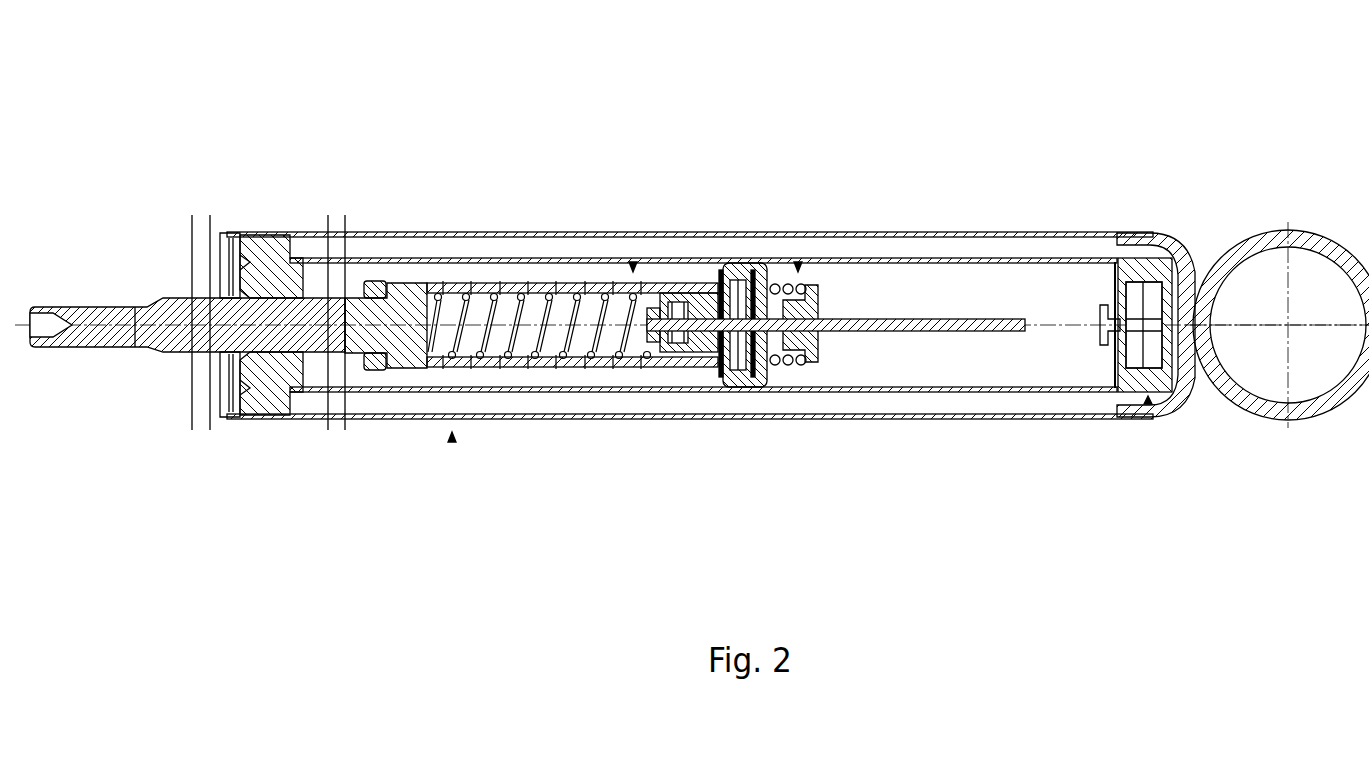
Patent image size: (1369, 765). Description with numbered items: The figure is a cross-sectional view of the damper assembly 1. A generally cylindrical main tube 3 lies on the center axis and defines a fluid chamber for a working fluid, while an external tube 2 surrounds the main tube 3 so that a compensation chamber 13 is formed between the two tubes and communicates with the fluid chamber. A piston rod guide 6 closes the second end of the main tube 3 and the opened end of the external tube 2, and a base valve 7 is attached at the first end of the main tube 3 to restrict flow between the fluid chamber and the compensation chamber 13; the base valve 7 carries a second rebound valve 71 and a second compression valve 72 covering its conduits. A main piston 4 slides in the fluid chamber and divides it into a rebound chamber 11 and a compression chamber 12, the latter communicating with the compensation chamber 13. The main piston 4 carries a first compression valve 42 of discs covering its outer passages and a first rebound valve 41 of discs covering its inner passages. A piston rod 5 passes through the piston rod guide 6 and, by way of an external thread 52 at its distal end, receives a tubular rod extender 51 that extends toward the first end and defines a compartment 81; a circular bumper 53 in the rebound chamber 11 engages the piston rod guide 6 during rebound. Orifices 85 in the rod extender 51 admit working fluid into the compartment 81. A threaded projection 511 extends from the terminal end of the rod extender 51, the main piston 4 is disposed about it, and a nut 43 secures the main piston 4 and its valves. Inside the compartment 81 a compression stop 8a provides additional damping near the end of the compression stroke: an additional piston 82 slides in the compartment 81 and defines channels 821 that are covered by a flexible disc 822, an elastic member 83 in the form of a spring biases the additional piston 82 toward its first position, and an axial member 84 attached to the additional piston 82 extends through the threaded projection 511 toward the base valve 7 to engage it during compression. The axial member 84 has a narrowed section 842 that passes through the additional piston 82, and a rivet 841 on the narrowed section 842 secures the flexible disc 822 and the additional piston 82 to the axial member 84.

The damper assembly 1 is at (452, 442).
The external tube 2 is at (527, 419).
The main tube 3 is at (492, 392).
The main piston 4 is at (798, 262).
The piston rod 5 is at (314, 353).
The piston rod guide 6 is at (265, 388).
The base valve 7 is at (1148, 404).
The compression stop 8a is at (634, 262).
The rebound chamber 11 is at (368, 373).
The compression chamber 12 is at (952, 287).
The compensation chamber 13 is at (1008, 248).
The first rebound valve 41 is at (752, 278).
The first compression valve 42 is at (710, 388).
The nut 43 is at (807, 362).
The rod extender 51 is at (466, 290).
The external thread 52 is at (400, 298).
The bumper 53 is at (370, 283).
The second rebound valve 71 is at (1110, 293).
The second compression valve 72 is at (1168, 298).
The compartment 81 is at (592, 285).
The additional piston 82 is at (692, 292).
The elastic member 83 is at (560, 285).
The axial member 84 is at (922, 332).
The orifice 85 is at (532, 292).
The threaded projection 511 is at (745, 393).
The channel 821 is at (680, 373).
The flexible disc 822 is at (650, 373).
The rivet 841 is at (633, 370).
The narrowed section 842 is at (672, 290).